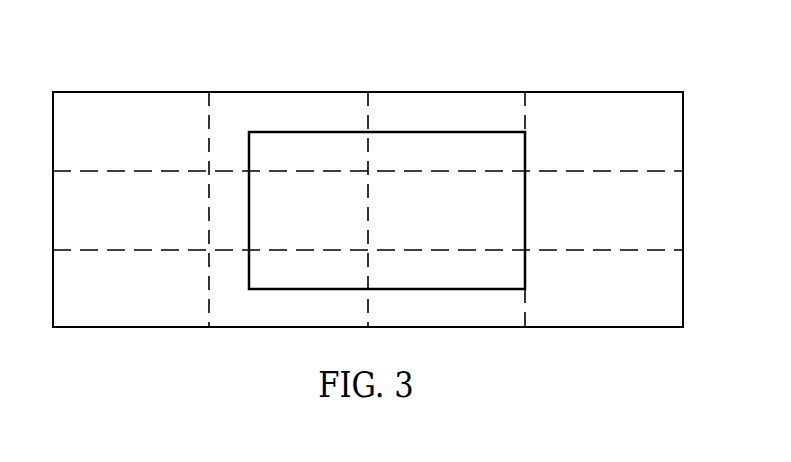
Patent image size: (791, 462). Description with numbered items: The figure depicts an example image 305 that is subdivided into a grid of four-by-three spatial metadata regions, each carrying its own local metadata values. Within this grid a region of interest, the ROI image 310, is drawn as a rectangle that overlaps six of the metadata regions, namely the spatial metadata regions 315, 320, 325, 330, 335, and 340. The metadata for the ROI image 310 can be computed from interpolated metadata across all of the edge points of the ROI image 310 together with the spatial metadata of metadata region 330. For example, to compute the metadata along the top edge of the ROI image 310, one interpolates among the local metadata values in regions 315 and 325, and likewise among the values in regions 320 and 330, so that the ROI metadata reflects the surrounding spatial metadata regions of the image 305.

The image 305 is at (165, 90).
The ROI image 310 is at (530, 211).
The spatial metadata region 315 is at (287, 102).
The spatial metadata region 320 is at (447, 102).
The spatial metadata region 325 is at (328, 227).
The spatial metadata region 330 is at (467, 227).
The spatial metadata region 335 is at (265, 318).
The spatial metadata region 340 is at (469, 318).